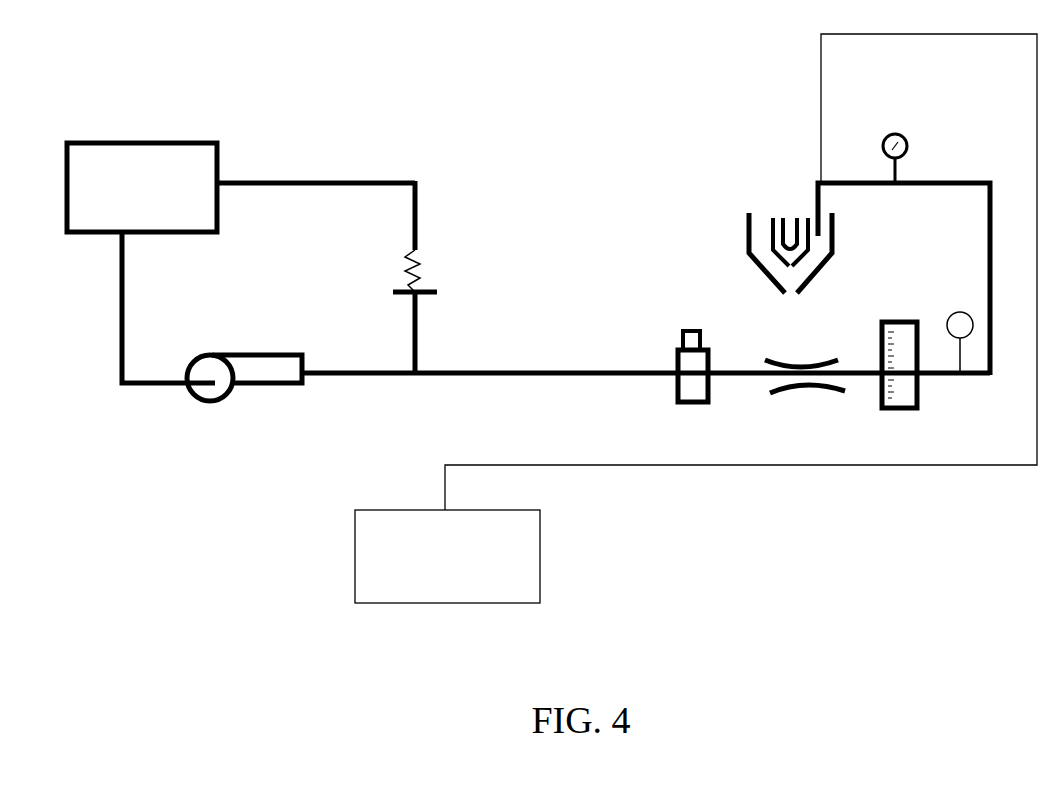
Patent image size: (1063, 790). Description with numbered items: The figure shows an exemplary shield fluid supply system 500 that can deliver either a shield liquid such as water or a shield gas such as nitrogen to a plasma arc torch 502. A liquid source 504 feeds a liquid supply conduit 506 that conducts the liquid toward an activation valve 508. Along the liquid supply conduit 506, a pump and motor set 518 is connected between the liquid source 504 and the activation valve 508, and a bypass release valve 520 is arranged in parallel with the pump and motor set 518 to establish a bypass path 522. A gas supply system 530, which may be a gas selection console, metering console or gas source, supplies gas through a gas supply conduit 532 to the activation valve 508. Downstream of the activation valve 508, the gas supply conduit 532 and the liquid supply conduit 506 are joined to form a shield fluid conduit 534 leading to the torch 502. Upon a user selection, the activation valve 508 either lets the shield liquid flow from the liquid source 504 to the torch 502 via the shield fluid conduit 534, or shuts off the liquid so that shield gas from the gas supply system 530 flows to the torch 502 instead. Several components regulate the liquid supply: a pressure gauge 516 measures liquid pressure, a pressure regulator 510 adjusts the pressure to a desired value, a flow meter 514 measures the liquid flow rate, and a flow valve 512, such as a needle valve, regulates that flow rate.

The supply system 500 is at (507, 72).
The plasma arc torch 502 is at (730, 240).
The liquid source 504 is at (142, 187).
The liquid supply conduit 506 is at (470, 369).
The activation valve 508 is at (697, 330).
The pressure regulator 510 is at (957, 312).
The flow valve 512 is at (809, 392).
The flow meter 514 is at (900, 410).
The pressure gauge 516 is at (890, 134).
The pump and motor set 518 is at (207, 405).
The bypass release valve 520 is at (430, 262).
The bypass path 522 is at (318, 182).
The gas supply system 530 is at (447, 556).
The gas supply conduit 532 is at (640, 466).
The shield fluid conduit 534 is at (815, 203).